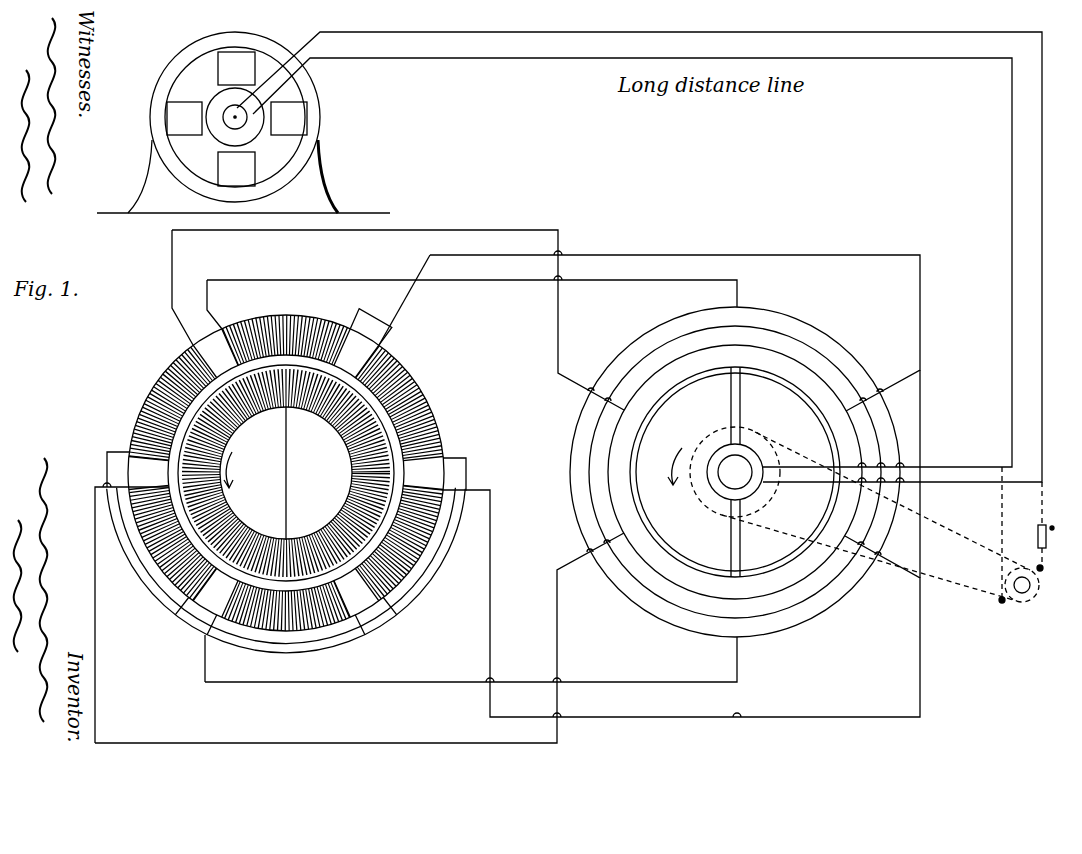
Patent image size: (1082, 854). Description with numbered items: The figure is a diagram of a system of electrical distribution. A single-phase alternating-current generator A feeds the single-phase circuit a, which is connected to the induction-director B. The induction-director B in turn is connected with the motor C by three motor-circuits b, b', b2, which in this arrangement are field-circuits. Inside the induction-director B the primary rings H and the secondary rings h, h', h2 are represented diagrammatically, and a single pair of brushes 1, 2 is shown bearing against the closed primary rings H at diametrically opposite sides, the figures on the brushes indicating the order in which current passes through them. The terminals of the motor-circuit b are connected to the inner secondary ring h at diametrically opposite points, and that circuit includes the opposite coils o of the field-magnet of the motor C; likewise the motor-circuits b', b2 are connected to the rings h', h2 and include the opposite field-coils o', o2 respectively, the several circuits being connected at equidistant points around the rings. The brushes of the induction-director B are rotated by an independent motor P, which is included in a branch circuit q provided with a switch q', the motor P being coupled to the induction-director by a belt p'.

The single-phase alternating-current generator A is at (243, 122).
The single-phase circuit a is at (646, 257).
The motor-circuit b is at (546, 473).
The motor-circuit b' is at (507, 487).
The motor-circuit b2 is at (471, 479).
The motor C is at (286, 481).
The field-coils o is at (285, 473).
The field-coils o' is at (281, 473).
The field-coils o2 is at (279, 655).
The induction-director B is at (922, 474).
The secondary ring h is at (735, 442).
The secondary ring h' is at (735, 462).
The secondary ring h2 is at (855, 357).
The primary rings H is at (820, 406).
The brush 1 is at (733, 398).
The brush 2 is at (748, 538).
The branch circuit q is at (1022, 535).
The switch q' is at (1056, 541).
The belt p' is at (876, 521).
The independent motor P is at (1022, 603).